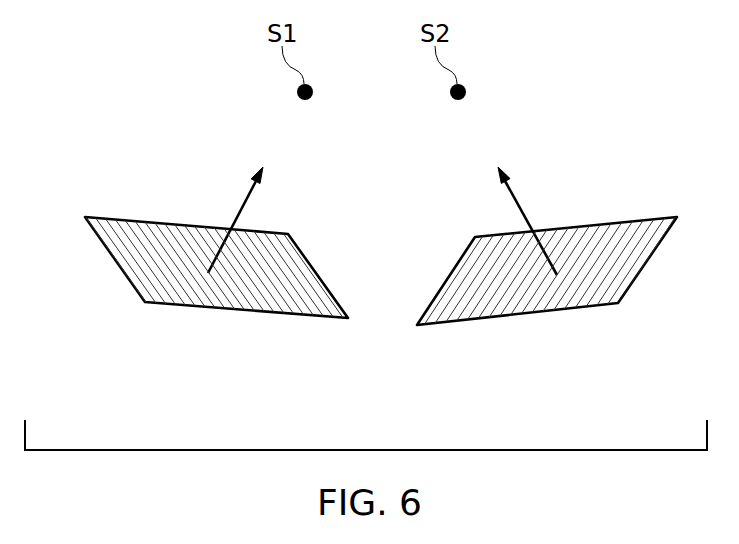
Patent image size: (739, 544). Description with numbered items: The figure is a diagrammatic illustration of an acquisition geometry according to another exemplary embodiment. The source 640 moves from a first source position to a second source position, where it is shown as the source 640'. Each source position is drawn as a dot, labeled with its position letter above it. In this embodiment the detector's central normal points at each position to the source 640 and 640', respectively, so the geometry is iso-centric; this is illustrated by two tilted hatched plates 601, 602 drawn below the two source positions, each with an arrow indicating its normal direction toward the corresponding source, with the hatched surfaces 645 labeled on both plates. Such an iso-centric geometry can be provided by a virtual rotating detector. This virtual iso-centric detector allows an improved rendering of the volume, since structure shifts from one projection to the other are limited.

The first reflective element 601 is at (233, 212).
The second reflective element 602 is at (530, 212).
The source 640 is at (335, 79).
The source 640' is at (492, 79).
The reflective surface 645 is at (180, 288).